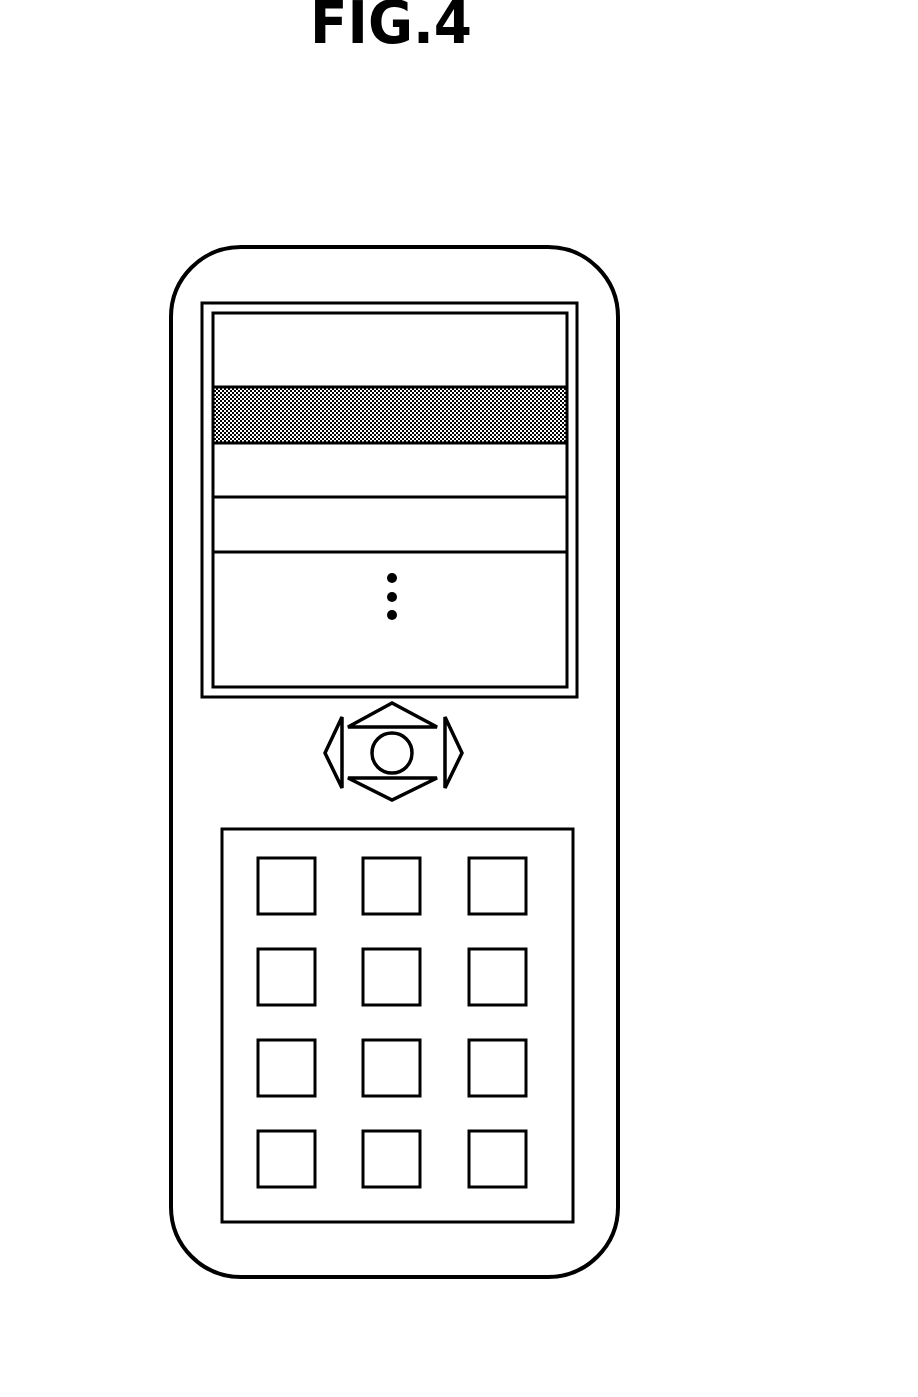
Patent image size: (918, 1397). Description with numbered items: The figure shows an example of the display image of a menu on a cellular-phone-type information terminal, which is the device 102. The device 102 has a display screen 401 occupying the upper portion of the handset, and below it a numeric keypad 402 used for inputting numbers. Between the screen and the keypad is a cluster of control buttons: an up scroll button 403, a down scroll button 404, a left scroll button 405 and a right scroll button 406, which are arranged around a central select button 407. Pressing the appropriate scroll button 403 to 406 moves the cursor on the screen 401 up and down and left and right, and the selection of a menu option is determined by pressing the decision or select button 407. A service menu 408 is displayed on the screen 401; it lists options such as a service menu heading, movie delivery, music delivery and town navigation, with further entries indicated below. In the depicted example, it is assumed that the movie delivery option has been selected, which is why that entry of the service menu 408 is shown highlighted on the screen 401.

The device 102 is at (245, 247).
The display screen 401 is at (580, 585).
The numeric keypad 402 is at (573, 970).
The up scroll button 403 is at (396, 714).
The down scroll button 404 is at (405, 790).
The left scroll button 405 is at (325, 756).
The right scroll button 406 is at (465, 758).
The select button 407 is at (386, 760).
The service menu 408 is at (540, 363).